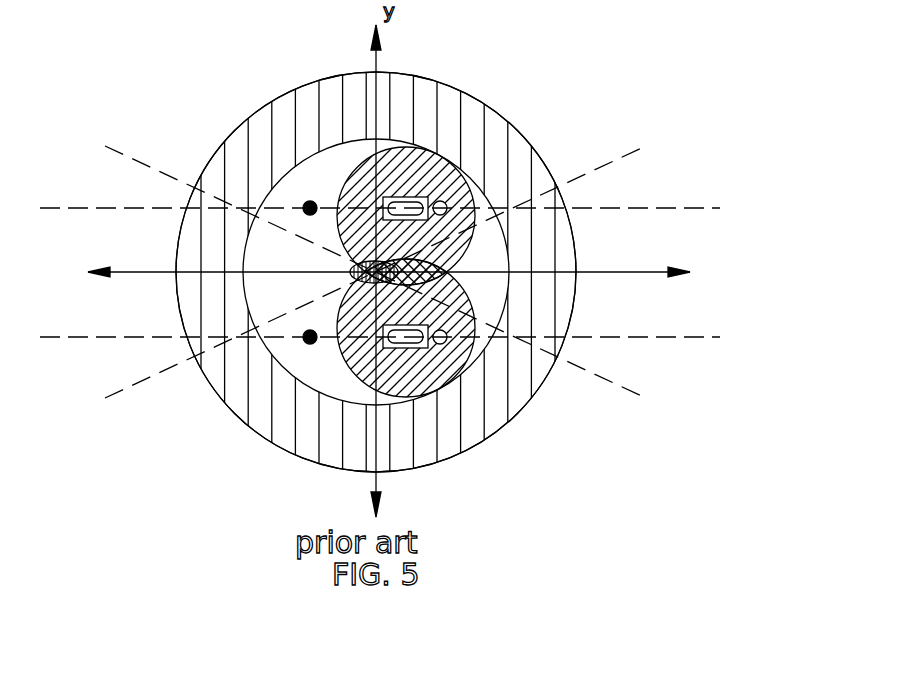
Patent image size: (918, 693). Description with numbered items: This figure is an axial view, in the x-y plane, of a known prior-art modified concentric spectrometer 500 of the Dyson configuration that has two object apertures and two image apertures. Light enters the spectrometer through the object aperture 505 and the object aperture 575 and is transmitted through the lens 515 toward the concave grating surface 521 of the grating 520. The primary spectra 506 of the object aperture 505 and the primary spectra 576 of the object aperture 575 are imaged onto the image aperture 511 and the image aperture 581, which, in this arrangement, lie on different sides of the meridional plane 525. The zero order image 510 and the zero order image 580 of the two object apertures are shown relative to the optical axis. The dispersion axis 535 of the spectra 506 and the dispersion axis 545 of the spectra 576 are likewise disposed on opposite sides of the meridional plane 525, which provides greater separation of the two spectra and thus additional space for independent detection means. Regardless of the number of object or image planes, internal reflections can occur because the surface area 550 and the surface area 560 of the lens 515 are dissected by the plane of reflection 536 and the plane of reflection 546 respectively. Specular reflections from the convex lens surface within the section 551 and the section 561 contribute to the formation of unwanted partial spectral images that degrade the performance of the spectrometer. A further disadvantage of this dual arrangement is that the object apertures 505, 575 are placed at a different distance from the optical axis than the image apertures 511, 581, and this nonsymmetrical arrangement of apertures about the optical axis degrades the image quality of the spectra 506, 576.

The modified concentric spectrometer 500 is at (390, 239).
The object aperture 505 is at (443, 345).
The primary spectra 506 is at (400, 197).
The zero order image 510 is at (303, 205).
The image aperture 511 is at (442, 196).
The lens 515 is at (277, 362).
The grating 520 is at (530, 144).
The concave grating surface 521 is at (485, 128).
The meridional plane 525 is at (136, 272).
The dispersion axis 535 is at (660, 208).
The plane of reflection 536 is at (646, 148).
The dispersion axis 545 is at (657, 338).
The plane of reflection 546 is at (618, 388).
The surface area 550 is at (360, 165).
The section 551 is at (350, 286).
The surface area 560 is at (355, 376).
The section 561 is at (340, 244).
The object aperture 575 is at (446, 148).
The primary spectra 576 is at (397, 348).
The zero order image 580 is at (306, 342).
The image aperture 581 is at (422, 394).